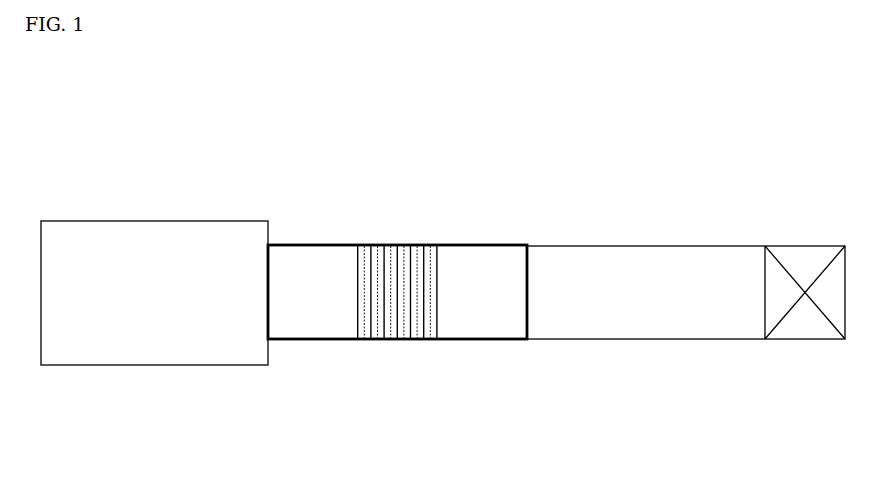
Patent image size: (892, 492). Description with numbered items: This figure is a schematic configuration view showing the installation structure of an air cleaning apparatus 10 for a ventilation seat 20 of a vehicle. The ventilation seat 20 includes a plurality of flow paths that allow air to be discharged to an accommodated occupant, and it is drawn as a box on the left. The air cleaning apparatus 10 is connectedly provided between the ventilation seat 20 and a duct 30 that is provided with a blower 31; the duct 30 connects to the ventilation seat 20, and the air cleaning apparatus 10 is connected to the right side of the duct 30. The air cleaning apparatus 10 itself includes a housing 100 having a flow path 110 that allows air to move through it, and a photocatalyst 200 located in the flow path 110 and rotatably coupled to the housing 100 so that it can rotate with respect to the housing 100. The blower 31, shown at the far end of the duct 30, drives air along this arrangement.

The air cleaning apparatus 10 is at (488, 242).
The ventilation seat 20 is at (155, 220).
The duct 30 is at (650, 245).
The blower 31 is at (800, 260).
The housing 100 is at (308, 341).
The flow path 110 is at (317, 258).
The photocatalyst 200 is at (400, 256).